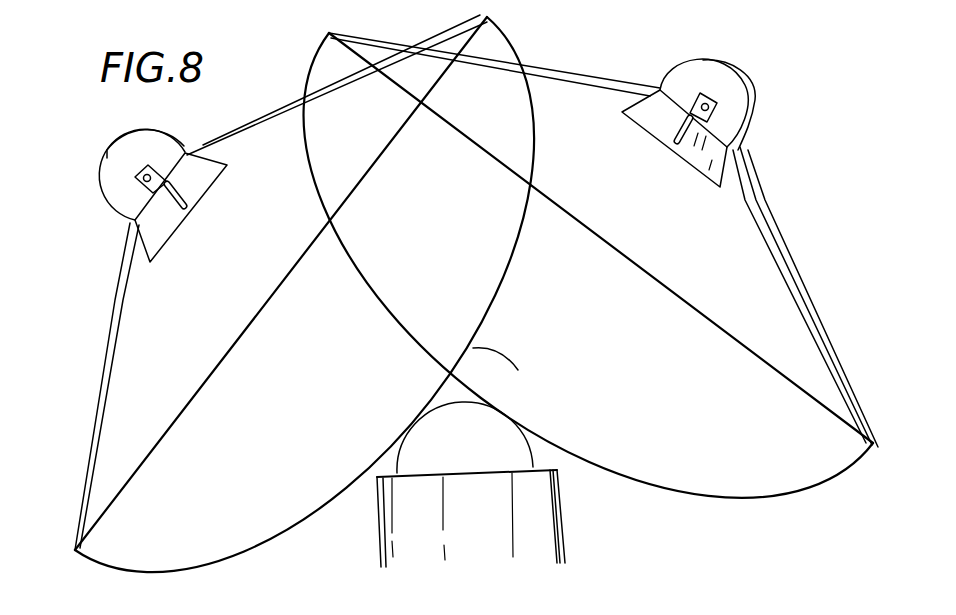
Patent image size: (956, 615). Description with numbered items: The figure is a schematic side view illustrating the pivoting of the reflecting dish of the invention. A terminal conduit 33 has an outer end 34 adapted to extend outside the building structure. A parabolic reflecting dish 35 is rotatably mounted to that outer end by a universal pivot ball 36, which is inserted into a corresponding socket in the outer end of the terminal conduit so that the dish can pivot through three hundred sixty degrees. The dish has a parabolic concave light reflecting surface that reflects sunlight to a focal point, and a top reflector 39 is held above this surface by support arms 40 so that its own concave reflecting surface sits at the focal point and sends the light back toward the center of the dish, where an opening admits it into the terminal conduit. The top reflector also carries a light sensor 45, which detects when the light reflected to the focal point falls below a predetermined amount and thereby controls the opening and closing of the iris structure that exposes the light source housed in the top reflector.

The terminal conduit 33 is at (563, 522).
The outer end 34 is at (557, 475).
The parabolic reflecting dish 35 is at (131, 589).
The universal pivot ball 36 is at (723, 610).
The top reflector 39 is at (103, 187).
The support arms 40 is at (107, 360).
The light sensor 45 is at (190, 195).